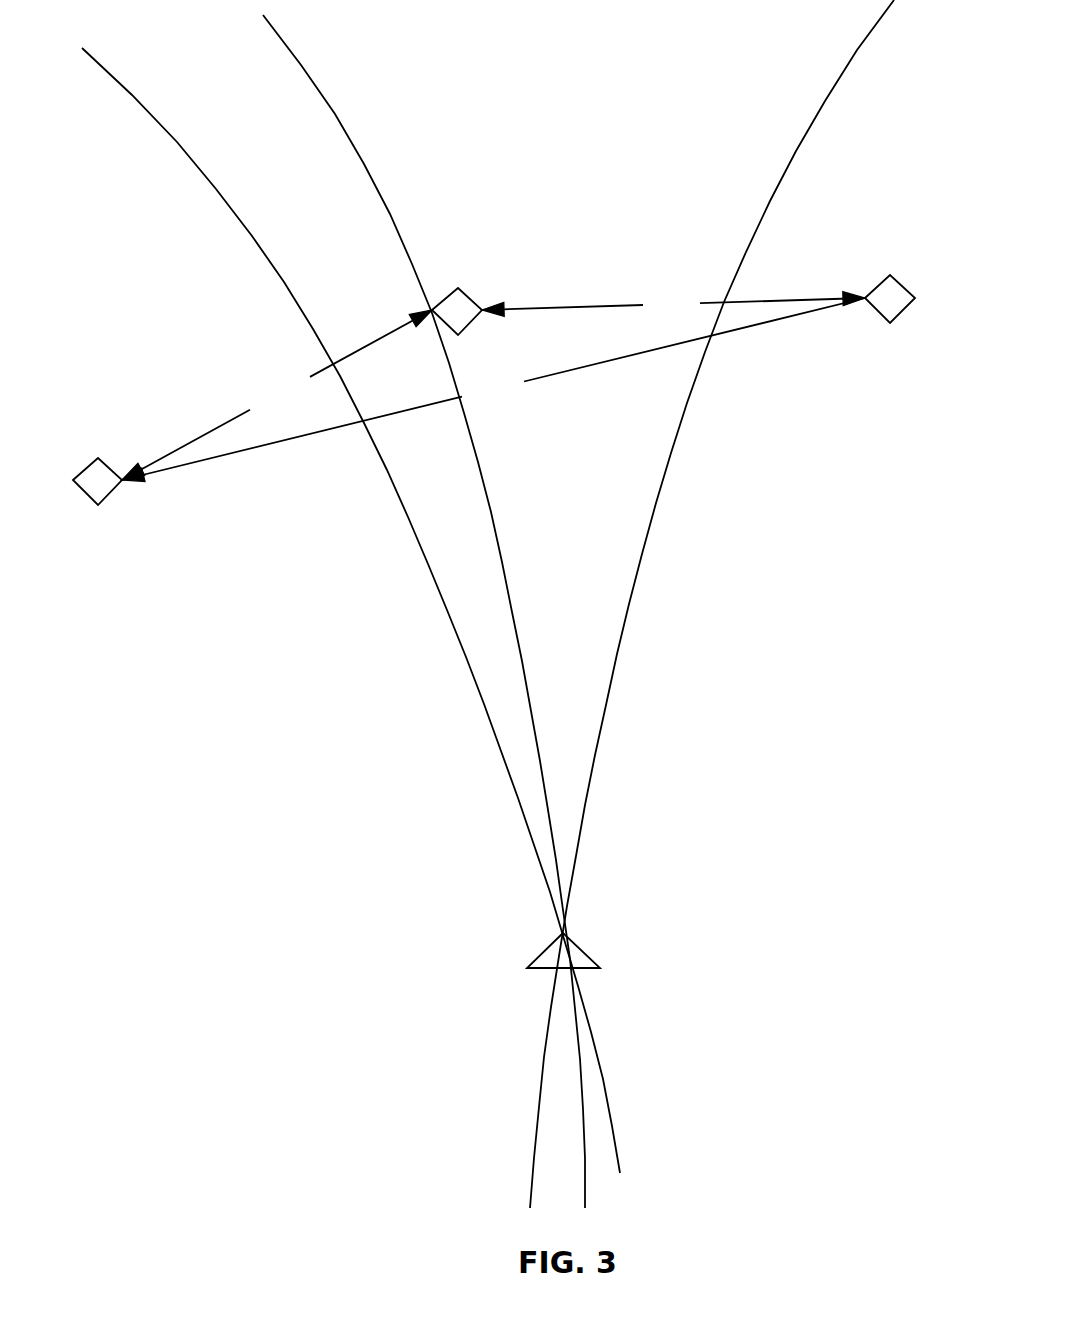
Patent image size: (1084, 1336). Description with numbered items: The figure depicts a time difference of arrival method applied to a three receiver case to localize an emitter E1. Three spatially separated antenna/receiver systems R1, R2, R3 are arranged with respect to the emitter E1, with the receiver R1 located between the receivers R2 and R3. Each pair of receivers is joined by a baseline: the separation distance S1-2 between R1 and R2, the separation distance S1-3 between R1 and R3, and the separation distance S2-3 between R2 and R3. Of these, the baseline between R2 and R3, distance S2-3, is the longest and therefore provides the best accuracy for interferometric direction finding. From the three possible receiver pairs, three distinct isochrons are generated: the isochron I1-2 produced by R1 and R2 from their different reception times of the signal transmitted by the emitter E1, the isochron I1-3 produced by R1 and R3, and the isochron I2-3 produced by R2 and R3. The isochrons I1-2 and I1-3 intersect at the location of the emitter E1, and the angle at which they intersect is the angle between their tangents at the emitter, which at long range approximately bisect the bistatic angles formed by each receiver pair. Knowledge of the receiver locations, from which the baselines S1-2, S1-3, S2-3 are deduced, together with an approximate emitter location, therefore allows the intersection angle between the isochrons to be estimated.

The antenna/receiver system R1 is at (462, 284).
The antenna/receiver system R2 is at (892, 277).
The antenna/receiver system R3 is at (101, 455).
The emitter E1 is at (592, 960).
The separation distance between R1 and R2 S1-2 is at (673, 302).
The separation distance between R1 and R3 S1-3 is at (277, 395).
The separation distance between R2 and R3 S2-3 is at (493, 390).
The isochron I1-2 is at (712, 604).
The isochron I1-3 is at (351, 610).
The isochron I2-3 is at (424, 611).